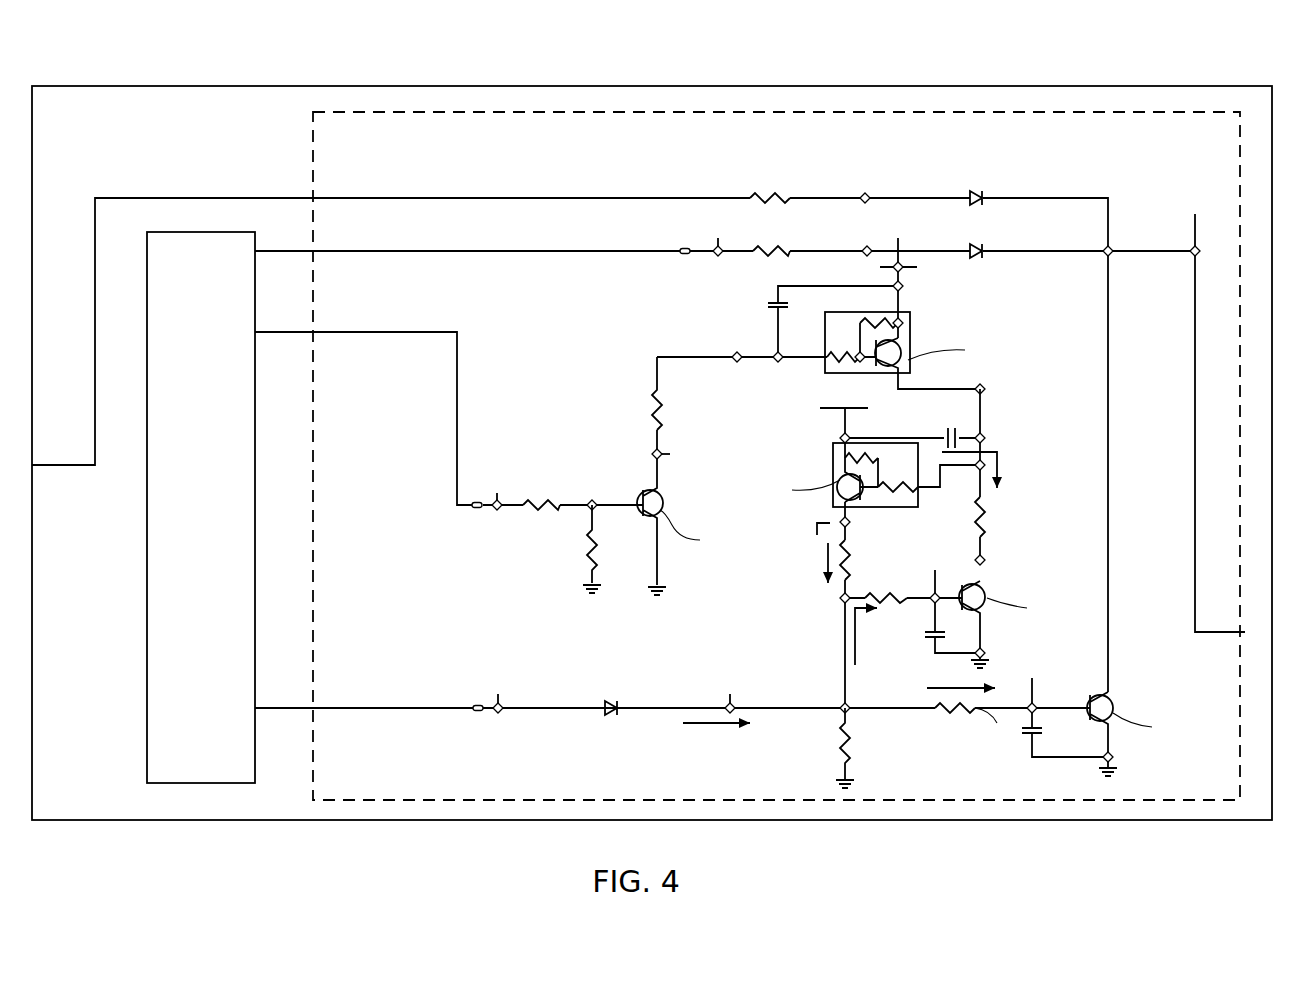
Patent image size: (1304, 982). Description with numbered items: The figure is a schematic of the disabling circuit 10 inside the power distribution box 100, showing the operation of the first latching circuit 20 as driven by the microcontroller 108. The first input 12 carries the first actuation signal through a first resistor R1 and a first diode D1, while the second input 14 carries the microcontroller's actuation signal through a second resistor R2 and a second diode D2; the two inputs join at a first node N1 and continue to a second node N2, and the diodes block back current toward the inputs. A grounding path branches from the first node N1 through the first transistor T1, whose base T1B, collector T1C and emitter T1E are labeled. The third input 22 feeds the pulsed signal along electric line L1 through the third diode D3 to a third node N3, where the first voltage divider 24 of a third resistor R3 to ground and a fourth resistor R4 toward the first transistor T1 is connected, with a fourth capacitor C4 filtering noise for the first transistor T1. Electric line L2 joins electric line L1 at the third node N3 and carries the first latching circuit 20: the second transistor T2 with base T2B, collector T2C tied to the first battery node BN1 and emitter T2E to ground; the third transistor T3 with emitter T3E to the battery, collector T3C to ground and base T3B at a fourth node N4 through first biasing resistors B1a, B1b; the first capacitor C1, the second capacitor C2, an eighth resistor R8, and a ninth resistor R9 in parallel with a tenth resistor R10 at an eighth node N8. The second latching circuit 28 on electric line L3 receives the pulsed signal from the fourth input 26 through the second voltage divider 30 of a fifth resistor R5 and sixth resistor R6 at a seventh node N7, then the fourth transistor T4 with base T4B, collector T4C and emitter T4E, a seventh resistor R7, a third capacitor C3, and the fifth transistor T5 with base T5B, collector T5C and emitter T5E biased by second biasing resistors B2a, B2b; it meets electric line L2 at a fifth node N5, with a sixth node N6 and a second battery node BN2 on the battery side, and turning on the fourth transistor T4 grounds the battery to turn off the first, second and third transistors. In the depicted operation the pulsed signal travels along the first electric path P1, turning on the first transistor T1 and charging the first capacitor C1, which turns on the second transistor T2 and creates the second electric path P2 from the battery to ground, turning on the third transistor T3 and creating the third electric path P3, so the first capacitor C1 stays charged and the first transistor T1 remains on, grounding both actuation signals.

The power distribution box 100 is at (235, 73).
The disabling circuit 10 is at (452, 107).
The first input 12 is at (570, 406).
The second input 14 is at (750, 401).
The fourth input 26 is at (388, 389).
The third input 22 is at (672, 693).
The microcontroller 108 is at (167, 587).
The second voltage divider 30 is at (604, 482).
The second latching circuit 28 is at (774, 314).
The first latching circuit 20 is at (882, 548).
The first voltage divider 24 is at (1012, 719).
The first resistor R1 is at (770, 186).
The second resistor R2 is at (771, 239).
The third resistor R3 is at (858, 748).
The fourth resistor R4 is at (955, 718).
The fifth resistor R5 is at (541, 494).
The sixth resistor R6 is at (605, 549).
The seventh resistor R7 is at (667, 393).
The eighth resistor R8 is at (992, 517).
The ninth resistor R9 is at (855, 560).
The tenth resistor R10 is at (902, 613).
The first diode D1 is at (974, 187).
The second diode D2 is at (975, 240).
The third diode D3 is at (611, 695).
The first capacitor C1 is at (950, 632).
The second capacitor C2 is at (965, 424).
The third capacitor C3 is at (793, 328).
The fourth capacitor C4 is at (1065, 717).
The first transistor T1 is at (1128, 700).
The second transistor T2 is at (1003, 588).
The third transistor T3 is at (790, 470).
The fourth transistor T4 is at (670, 490).
The fifth transistor T5 is at (876, 338).
The base T1B is at (1088, 698).
The collector T1C is at (1113, 690).
The emitter T1E is at (1115, 720).
The base T2B is at (955, 595).
The collector T2C is at (993, 580).
The emitter T2E is at (983, 610).
The base T3B is at (843, 512).
The collector T3C is at (843, 500).
The emitter T3E is at (845, 470).
The base T4B is at (640, 503).
The collector T4C is at (648, 492).
The emitter T4E is at (660, 518).
The base T5B is at (873, 353).
The collector T5C is at (900, 340).
The emitter T5E is at (905, 368).
The first node N1 is at (1112, 247).
The second node N2 is at (1193, 256).
The third node N3 is at (852, 705).
The fourth node N4 is at (985, 465).
The fifth node N5 is at (985, 387).
The sixth node N6 is at (737, 355).
The seventh node N7 is at (592, 500).
The eighth node N8 is at (840, 600).
The first battery node BN1 is at (840, 438).
The second battery node BN2 is at (903, 286).
The first biasing resistor B1a is at (875, 455).
The first biasing resistor B1b is at (905, 493).
The second biasing resistor B2a is at (870, 322).
The second biasing resistor B2b is at (823, 357).
The electric line L1 is at (553, 705).
The electric line L2 is at (842, 645).
The electric line L3 is at (457, 398).
The first electric path P1 is at (855, 643).
The second electric path P2 is at (1000, 470).
The third electric path P3 is at (823, 560).